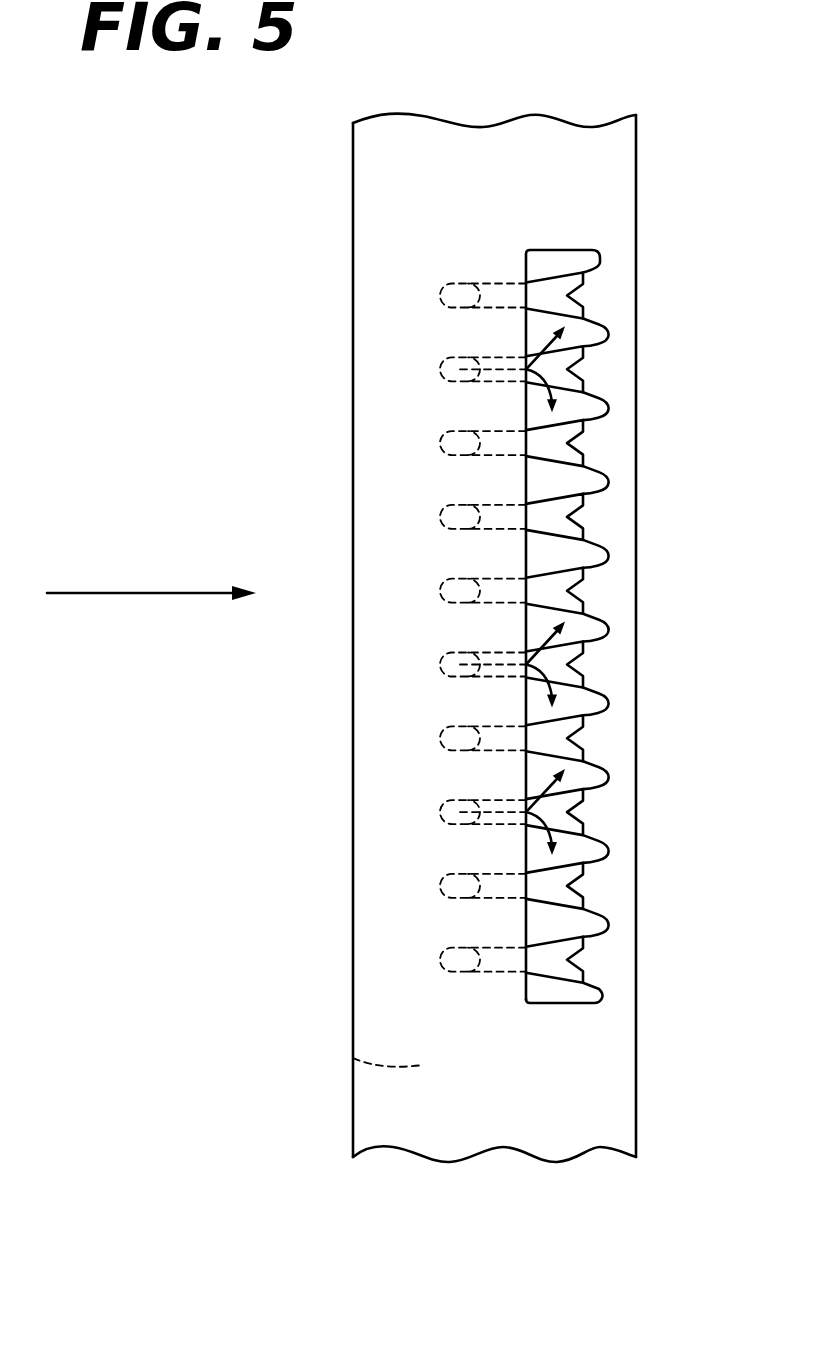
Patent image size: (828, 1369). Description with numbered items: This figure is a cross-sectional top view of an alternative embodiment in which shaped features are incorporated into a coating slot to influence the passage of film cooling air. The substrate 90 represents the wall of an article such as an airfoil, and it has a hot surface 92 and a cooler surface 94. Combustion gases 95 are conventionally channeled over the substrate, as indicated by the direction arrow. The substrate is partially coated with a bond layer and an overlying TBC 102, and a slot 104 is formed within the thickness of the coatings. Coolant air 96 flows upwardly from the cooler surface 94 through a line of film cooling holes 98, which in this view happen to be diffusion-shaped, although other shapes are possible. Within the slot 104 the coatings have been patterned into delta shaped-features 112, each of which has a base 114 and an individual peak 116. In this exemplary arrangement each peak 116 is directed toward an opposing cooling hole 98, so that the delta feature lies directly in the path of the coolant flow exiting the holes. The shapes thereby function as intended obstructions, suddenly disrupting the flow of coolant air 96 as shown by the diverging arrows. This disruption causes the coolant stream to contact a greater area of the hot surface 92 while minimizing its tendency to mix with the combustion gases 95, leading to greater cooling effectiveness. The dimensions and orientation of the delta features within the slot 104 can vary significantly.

The substrate 90 is at (447, 1169).
The hot surface 92 is at (353, 1058).
The cooler surface 94 is at (353, 877).
The combustion gases 95 is at (146, 591).
The coolant air 96 is at (553, 351).
The film cooling holes 98 is at (456, 293).
The TBC 102 is at (618, 292).
The slot 104 is at (594, 478).
The delta shaped-features 112 is at (592, 345).
The base 114 is at (594, 552).
The peaks 116 is at (528, 490).